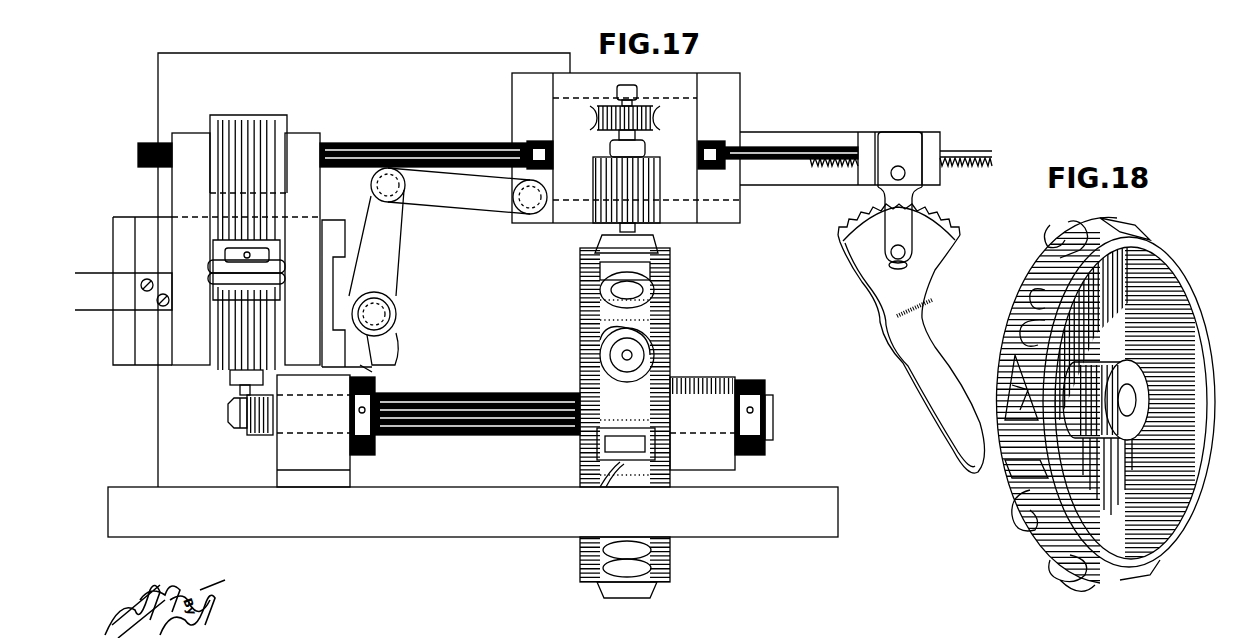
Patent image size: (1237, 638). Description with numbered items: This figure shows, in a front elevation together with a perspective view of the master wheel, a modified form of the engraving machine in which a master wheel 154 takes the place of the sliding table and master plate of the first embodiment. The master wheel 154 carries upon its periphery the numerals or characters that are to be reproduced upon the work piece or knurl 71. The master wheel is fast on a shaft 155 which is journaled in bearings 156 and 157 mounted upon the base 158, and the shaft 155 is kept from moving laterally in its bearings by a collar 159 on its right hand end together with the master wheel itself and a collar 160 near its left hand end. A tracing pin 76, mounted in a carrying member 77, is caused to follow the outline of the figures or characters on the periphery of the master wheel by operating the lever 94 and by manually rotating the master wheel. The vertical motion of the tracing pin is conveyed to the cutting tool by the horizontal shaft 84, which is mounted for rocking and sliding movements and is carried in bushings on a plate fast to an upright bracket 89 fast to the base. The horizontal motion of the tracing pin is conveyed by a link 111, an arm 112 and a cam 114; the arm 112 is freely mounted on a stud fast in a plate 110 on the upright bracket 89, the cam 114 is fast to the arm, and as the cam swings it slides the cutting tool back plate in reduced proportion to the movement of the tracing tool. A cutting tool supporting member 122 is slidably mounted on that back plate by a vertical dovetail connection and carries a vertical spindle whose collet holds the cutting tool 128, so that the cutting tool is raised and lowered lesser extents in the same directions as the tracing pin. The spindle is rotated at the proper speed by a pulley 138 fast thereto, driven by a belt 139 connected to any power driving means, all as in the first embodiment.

In FIG. 17, the work piece 71 is at (245, 430).
In FIG. 17, the tracing pin 76 is at (635, 232).
In FIG. 17, the carrying member 77 is at (682, 90).
In FIG. 17, the horizontal shaft 84 is at (772, 150).
In FIG. 17, the upright bracket 89 is at (158, 97).
In FIG. 17, the lever 94 is at (932, 398).
In FIG. 17, the plate 110 is at (348, 336).
In FIG. 17, the link 111 is at (465, 207).
In FIG. 17, the arm 112 is at (380, 272).
In FIG. 17, the cam 114 is at (352, 300).
In FIG. 17, the cutting tool supporting member 122 is at (190, 198).
In FIG. 17, the cutting tool 128 is at (250, 392).
In FIG. 17, the pulley 138 is at (272, 270).
In FIG. 17, the belt 139 is at (275, 281).
In FIG. 17, the master wheel 154 is at (660, 278).
In FIG. 18, the master wheel 154 is at (1032, 538).
In FIG. 17, the shaft 155 is at (485, 425).
In FIG. 17, the bearing 156 is at (712, 378).
In FIG. 17, the bearing 157 is at (285, 455).
In FIG. 17, the base 158 is at (460, 500).
In FIG. 17, the collar 159 is at (745, 378).
In FIG. 17, the collar 160 is at (357, 370).